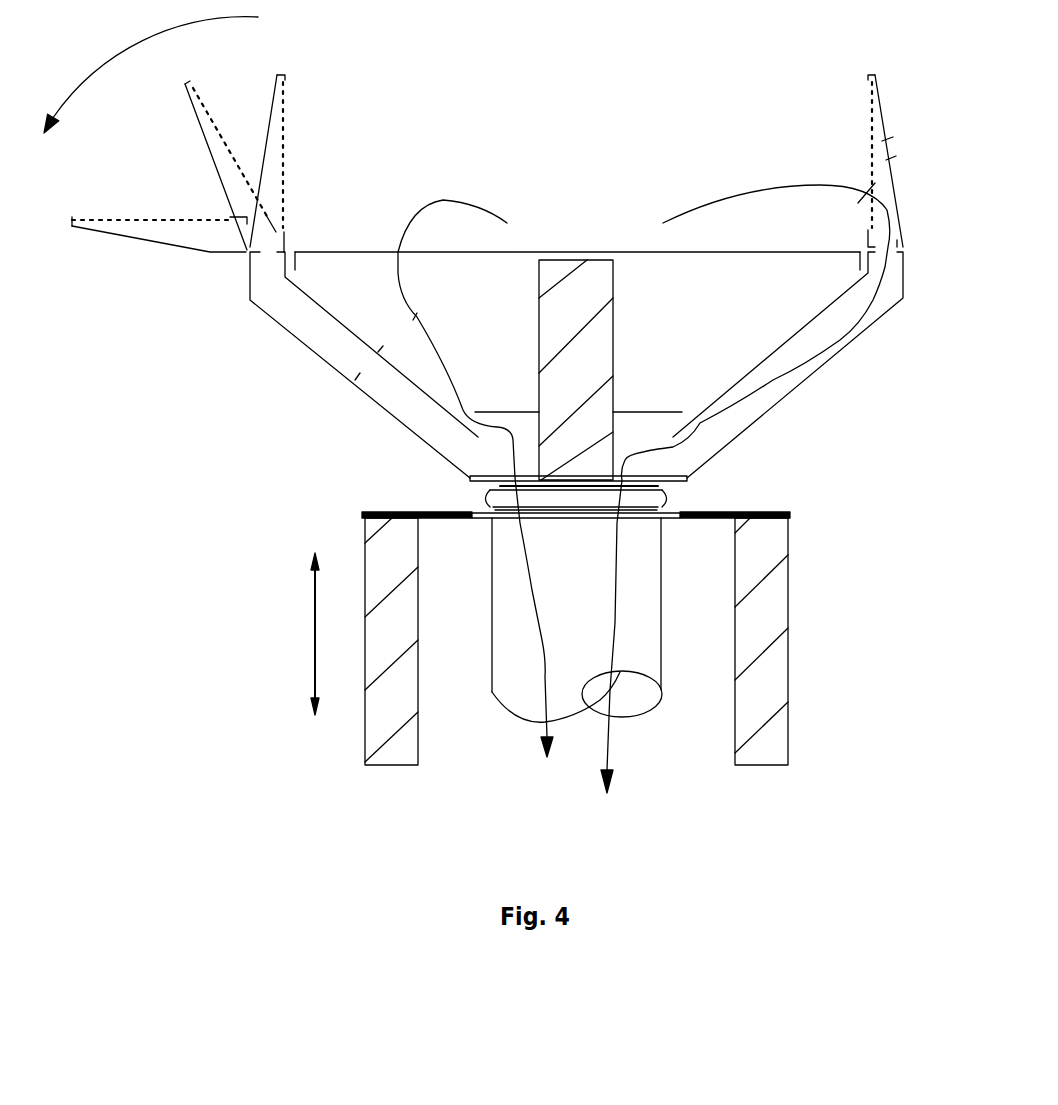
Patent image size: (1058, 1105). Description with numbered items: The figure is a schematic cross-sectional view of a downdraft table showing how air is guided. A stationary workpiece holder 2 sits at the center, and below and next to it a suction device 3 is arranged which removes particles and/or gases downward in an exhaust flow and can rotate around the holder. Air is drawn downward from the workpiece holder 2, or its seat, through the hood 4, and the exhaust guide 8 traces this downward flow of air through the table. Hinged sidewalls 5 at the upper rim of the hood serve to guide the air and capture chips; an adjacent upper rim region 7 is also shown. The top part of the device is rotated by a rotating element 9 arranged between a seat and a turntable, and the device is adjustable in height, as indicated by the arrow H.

The workpiece holder 2 is at (587, 258).
The suction device 3 is at (156, 366).
The hood 4 is at (332, 367).
The hinged sidewalls 5 is at (150, 242).
The rim / cover 7 is at (343, 252).
The exhaust guide 8 is at (443, 200).
The rotating element 9 is at (670, 497).
The arrow H is at (315, 588).